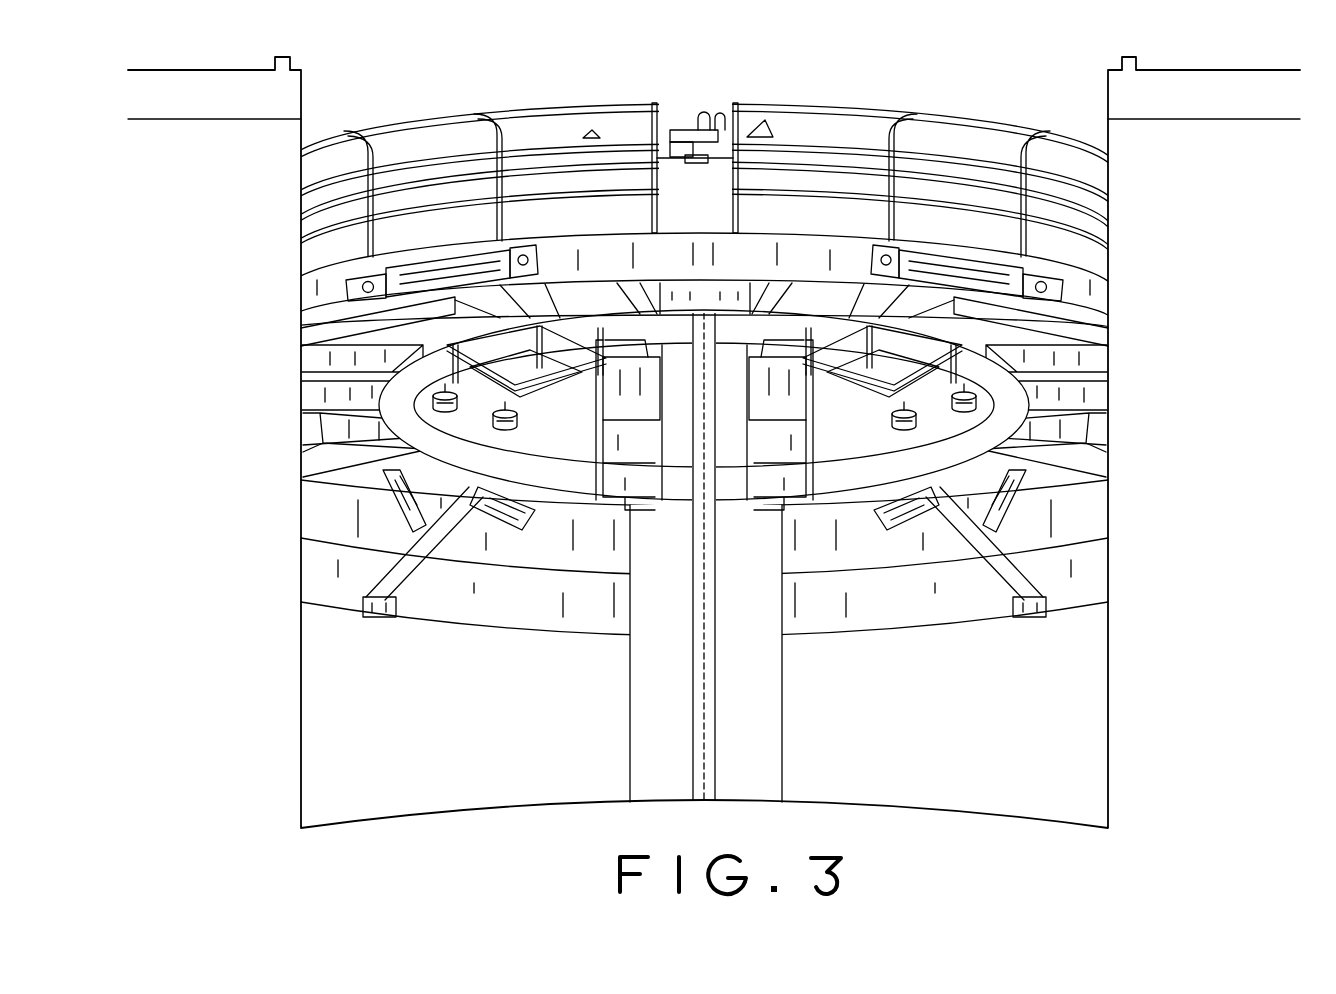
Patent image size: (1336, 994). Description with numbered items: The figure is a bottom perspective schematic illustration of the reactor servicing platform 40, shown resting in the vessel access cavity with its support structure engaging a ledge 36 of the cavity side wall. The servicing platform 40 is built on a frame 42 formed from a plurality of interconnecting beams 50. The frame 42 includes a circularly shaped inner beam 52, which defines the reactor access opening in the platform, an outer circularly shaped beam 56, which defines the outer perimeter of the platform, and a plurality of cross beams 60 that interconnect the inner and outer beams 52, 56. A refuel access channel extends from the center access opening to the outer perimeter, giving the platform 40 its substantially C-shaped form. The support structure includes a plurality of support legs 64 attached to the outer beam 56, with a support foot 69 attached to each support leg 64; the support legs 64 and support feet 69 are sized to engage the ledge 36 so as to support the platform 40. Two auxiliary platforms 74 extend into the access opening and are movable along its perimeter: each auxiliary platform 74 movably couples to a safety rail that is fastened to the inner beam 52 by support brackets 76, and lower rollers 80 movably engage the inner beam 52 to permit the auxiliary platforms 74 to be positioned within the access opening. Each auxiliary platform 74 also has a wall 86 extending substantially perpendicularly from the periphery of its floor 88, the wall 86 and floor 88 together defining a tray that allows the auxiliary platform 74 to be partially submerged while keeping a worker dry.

The ledge 36 is at (535, 632).
The reactor servicing platform 40 is at (444, 75).
The frame 42 is at (1099, 433).
The interconnecting beams 50 is at (305, 362).
The inner beam 52 is at (778, 443).
The outer beam 56 is at (499, 468).
The cross beams 60 is at (1093, 362).
The support legs 64 is at (409, 563).
The support foot 69 is at (367, 613).
The auxiliary platform 74 is at (893, 380).
The support brackets 76 is at (790, 392).
The lower rollers 80 is at (967, 407).
The wall 86 is at (652, 382).
The floor 88 is at (530, 378).